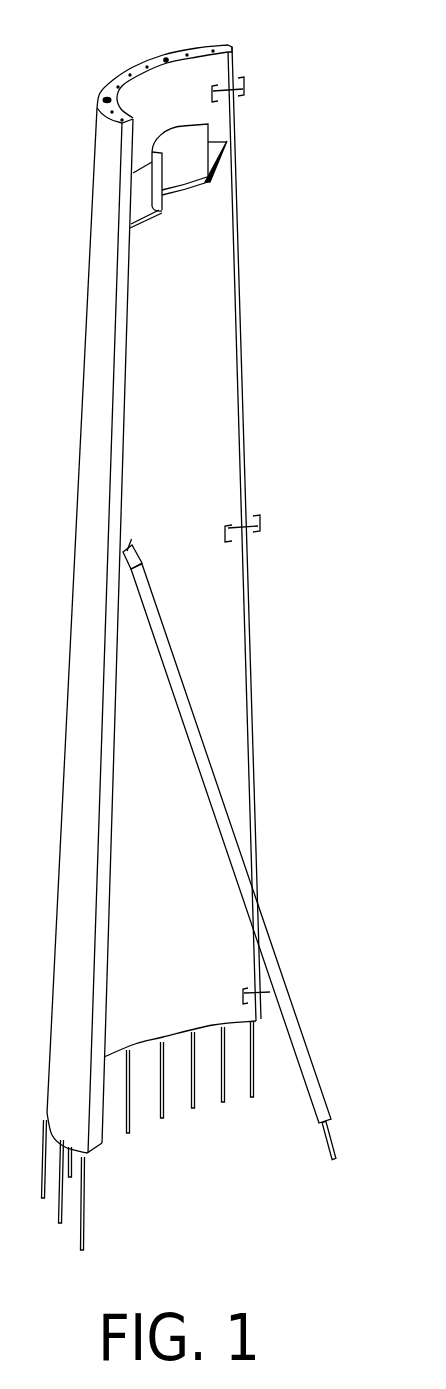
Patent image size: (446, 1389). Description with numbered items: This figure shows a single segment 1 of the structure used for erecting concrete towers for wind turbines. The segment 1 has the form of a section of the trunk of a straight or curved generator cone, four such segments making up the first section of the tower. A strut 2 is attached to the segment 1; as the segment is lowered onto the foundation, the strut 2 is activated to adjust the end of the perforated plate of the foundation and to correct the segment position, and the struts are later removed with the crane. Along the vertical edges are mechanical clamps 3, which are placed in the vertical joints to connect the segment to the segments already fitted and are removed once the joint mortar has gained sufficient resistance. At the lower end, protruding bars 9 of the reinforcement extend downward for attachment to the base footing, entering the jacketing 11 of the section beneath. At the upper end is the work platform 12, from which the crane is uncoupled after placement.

The segment 1 is at (178, 438).
The strut 2 is at (197, 747).
The clamps 3 is at (254, 523).
The protruding bars 9 is at (148, 1143).
The jacketing 11 is at (145, 65).
The work platform 12 is at (172, 165).